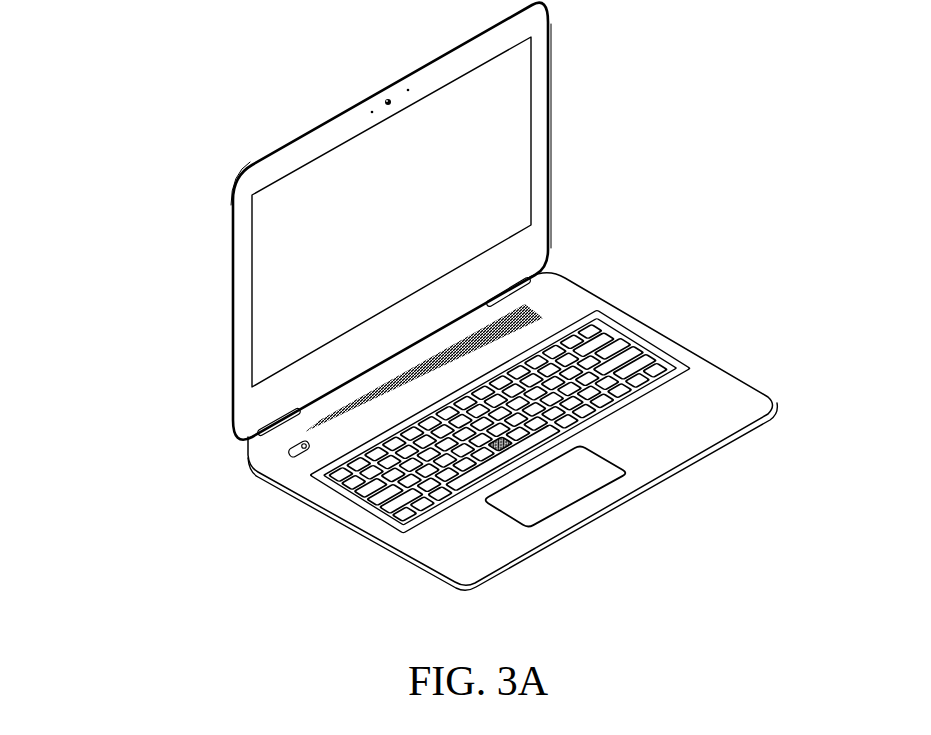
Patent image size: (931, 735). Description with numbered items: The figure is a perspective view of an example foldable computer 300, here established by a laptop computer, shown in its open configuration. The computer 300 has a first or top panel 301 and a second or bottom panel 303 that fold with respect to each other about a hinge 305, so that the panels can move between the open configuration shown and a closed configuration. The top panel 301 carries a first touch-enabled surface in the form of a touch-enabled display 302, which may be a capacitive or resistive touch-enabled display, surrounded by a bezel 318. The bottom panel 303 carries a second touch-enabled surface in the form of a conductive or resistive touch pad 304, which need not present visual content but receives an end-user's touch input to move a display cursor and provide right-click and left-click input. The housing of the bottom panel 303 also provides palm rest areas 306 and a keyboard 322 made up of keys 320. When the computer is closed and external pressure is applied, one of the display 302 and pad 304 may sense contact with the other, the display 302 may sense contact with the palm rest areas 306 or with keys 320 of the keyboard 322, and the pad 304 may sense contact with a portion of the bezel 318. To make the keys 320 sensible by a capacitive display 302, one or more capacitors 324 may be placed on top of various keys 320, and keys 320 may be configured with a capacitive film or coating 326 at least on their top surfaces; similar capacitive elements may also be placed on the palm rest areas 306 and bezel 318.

The foldable computer 300 is at (148, 40).
The first/top panel 301 is at (232, 233).
The touch-enabled display 302 is at (278, 267).
The second/bottom panel 303 is at (347, 523).
The touch pad 304 is at (609, 457).
The hinge 305 is at (255, 440).
The palm rest areas 306 is at (707, 402).
The bezel 318 is at (320, 136).
The keys 320 is at (320, 481).
The keyboard 322 is at (660, 345).
The capacitors 324 is at (437, 425).
The capacitive film or coating 326 is at (435, 497).